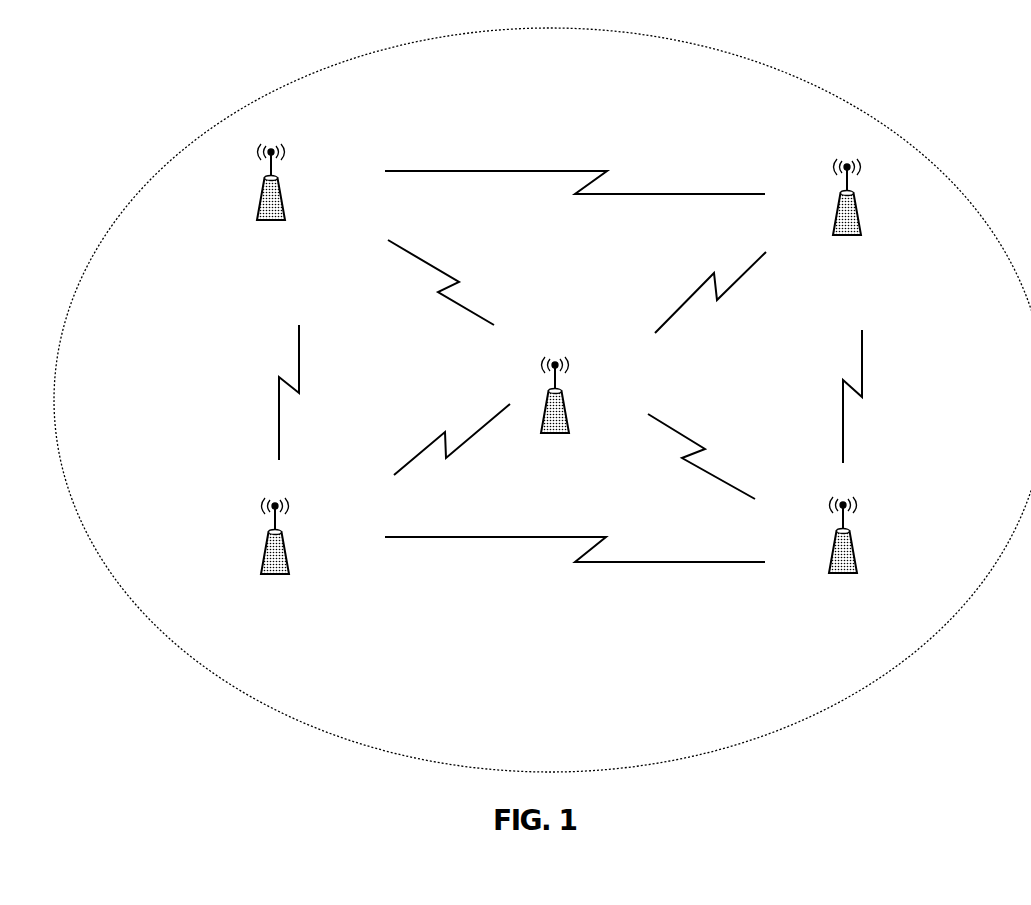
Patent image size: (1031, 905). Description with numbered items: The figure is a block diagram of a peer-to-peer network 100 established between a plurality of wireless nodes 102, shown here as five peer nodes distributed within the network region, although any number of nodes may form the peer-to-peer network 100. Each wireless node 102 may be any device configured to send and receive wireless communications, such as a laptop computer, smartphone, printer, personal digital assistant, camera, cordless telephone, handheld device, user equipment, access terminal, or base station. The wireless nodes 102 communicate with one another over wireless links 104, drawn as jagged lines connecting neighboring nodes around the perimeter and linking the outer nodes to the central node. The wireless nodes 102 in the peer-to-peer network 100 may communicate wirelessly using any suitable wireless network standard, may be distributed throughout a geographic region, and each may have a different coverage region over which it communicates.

The peer-to-peer network 100 is at (186, 38).
The wireless node 102 is at (286, 203).
The wireless link 104 is at (527, 171).